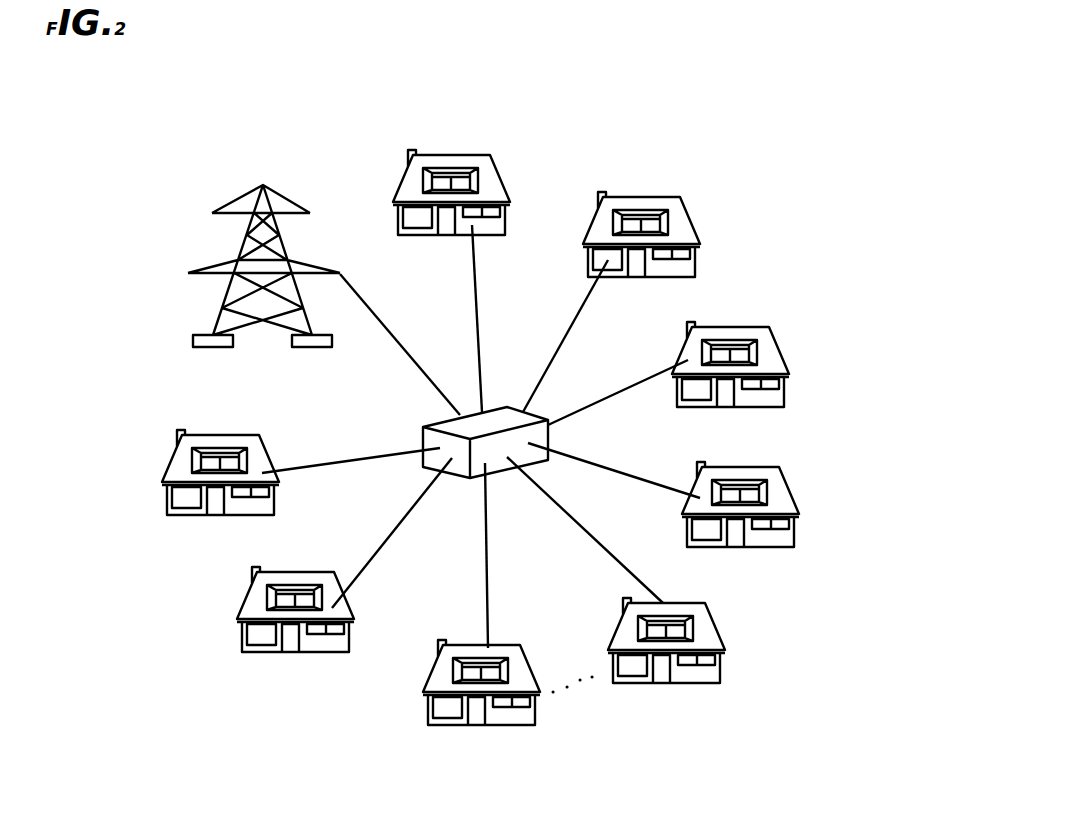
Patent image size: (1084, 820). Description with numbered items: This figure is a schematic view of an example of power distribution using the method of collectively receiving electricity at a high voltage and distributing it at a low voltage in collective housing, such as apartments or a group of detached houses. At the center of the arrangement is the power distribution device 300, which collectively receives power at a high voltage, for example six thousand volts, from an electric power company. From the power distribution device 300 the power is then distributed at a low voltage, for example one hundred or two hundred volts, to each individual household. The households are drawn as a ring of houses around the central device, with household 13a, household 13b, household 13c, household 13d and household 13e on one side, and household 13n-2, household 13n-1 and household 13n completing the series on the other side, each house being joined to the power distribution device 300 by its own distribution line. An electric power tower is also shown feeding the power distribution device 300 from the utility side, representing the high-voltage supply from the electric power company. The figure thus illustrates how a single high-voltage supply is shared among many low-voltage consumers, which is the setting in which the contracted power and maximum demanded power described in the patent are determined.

The power distribution device 300 is at (493, 416).
The household 13a is at (490, 180).
The household 13b is at (680, 215).
The household 13c is at (743, 337).
The household 13d is at (762, 477).
The household 13e is at (700, 622).
The household 13n-2 is at (507, 655).
The household 13n is at (230, 445).
The household 13n-1 is at (283, 582).